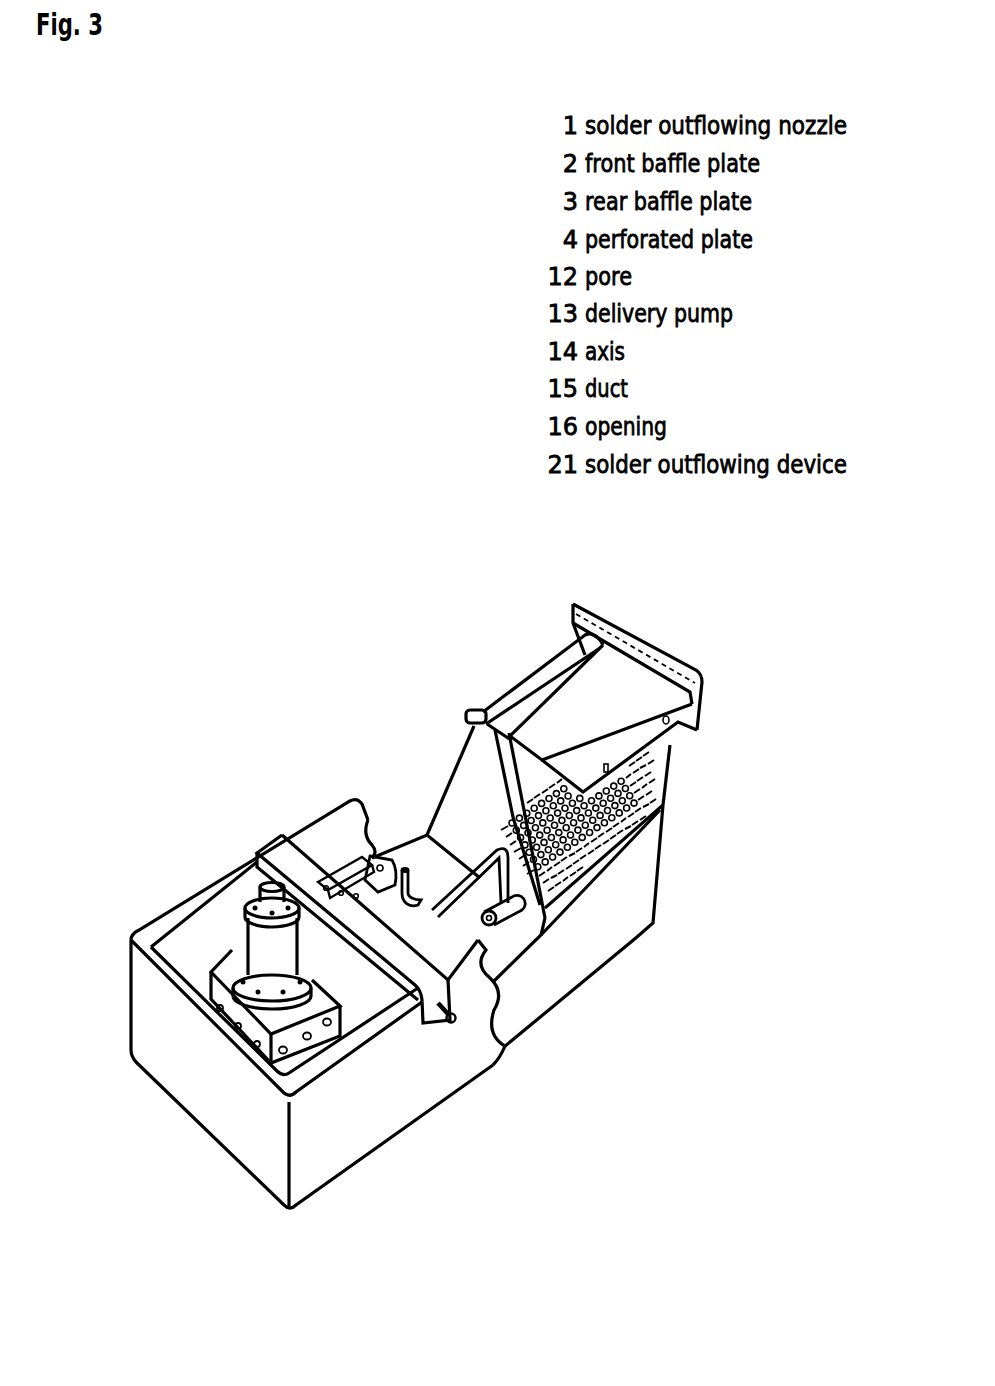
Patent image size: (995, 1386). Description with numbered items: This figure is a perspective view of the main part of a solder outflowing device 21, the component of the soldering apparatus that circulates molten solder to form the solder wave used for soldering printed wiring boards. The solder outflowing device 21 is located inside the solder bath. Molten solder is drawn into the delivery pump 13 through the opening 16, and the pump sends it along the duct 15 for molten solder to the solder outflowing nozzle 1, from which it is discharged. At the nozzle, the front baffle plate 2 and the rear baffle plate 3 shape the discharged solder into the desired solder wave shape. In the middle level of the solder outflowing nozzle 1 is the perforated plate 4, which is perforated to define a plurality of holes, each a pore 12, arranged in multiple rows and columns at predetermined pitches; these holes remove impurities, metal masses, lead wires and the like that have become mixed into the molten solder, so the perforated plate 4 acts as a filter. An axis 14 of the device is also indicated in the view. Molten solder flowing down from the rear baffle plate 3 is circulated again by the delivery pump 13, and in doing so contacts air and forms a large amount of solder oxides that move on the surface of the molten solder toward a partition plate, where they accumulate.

The solder outflowing nozzle 1 is at (630, 855).
The front baffle plate 2 is at (555, 658).
The rear baffle plate 3 is at (650, 695).
The perforated plate 4 is at (500, 833).
The pore 12 is at (633, 789).
The delivery pump 13 is at (257, 948).
The axis 14 is at (263, 880).
The duct 15 is at (540, 996).
The opening 16 is at (268, 1060).
The solder outflowing device 21 is at (458, 658).